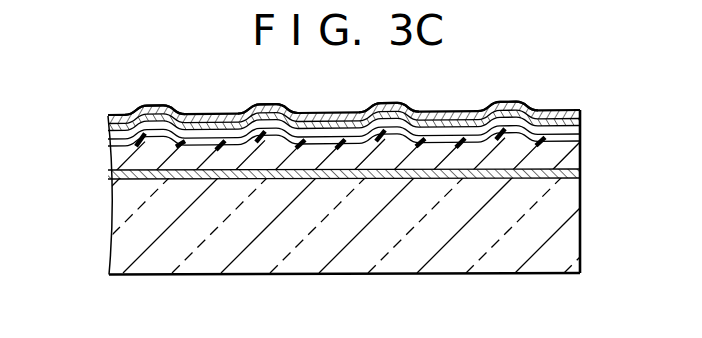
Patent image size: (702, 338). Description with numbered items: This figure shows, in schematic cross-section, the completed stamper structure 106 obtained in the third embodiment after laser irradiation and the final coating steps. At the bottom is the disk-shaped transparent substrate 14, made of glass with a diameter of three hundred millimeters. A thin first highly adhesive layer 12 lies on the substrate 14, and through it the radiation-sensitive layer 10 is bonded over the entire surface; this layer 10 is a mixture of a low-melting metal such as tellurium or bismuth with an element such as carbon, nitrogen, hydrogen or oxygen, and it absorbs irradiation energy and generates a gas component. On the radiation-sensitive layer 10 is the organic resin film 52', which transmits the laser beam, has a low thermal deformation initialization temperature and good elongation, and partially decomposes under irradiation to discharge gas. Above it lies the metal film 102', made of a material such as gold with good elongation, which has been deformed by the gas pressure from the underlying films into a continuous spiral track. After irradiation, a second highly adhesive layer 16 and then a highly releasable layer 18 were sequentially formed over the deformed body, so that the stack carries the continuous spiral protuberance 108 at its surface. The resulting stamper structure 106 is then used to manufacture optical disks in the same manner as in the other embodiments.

The continuous spiral protuberance 108 is at (394, 101).
The highly releasable layer 18 is at (563, 108).
The second highly adhesive layer 16 is at (582, 121).
The metal film 102' is at (309, 130).
The organic resin film 52' is at (374, 139).
The radiation-sensitive layer 10 is at (98, 150).
The first highly adhesive layer 12 is at (98, 169).
The transparent substrate 14 is at (495, 267).
The stamper structure 106 is at (581, 217).